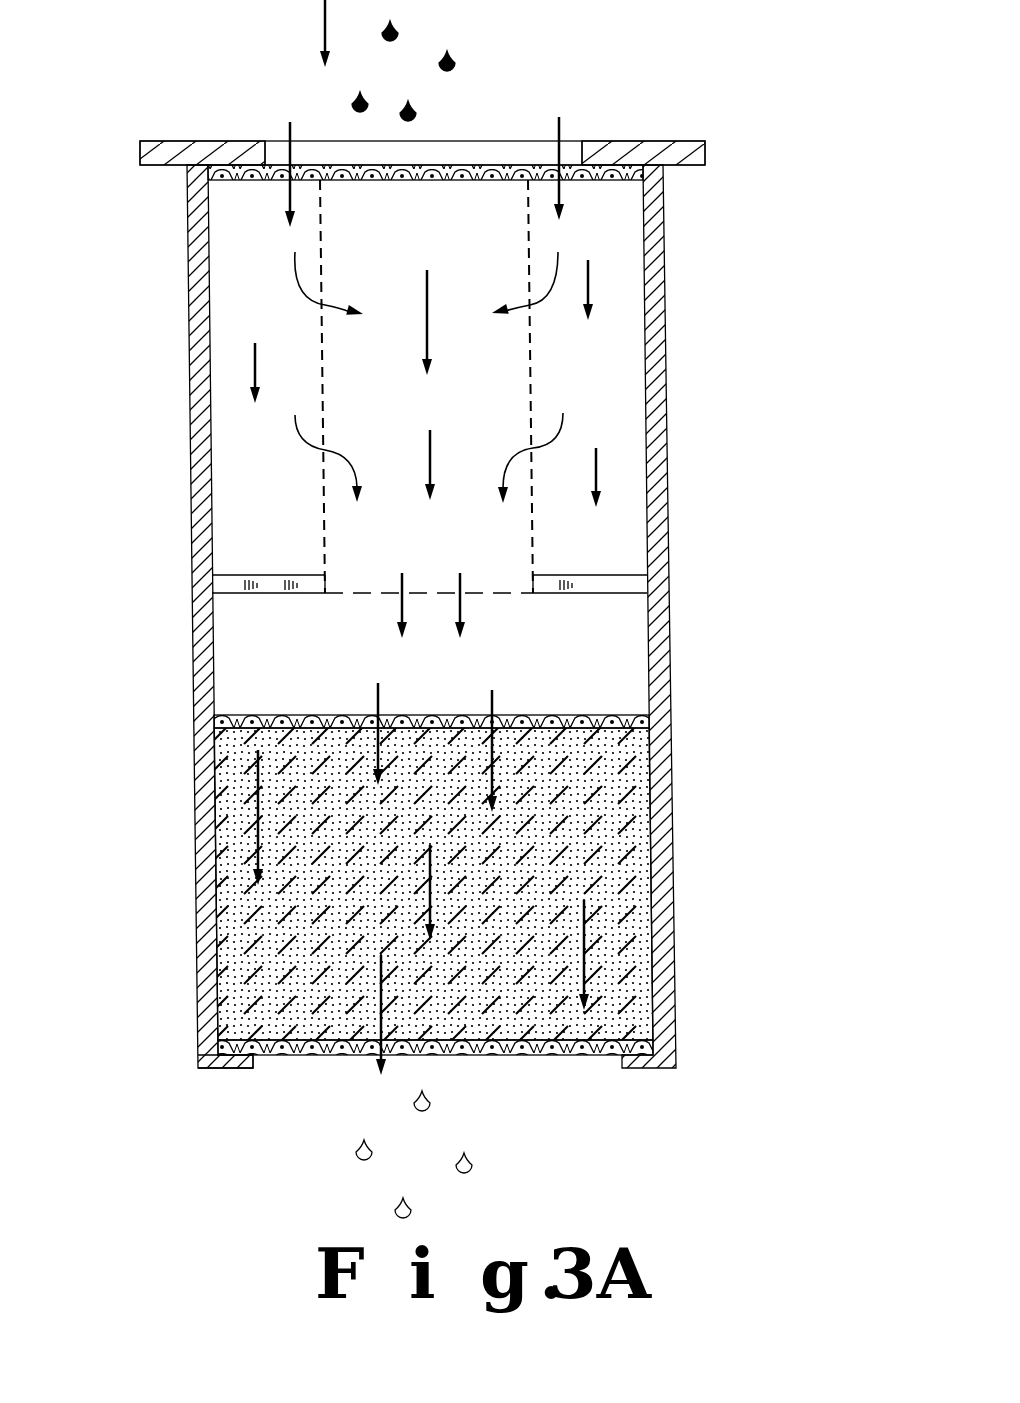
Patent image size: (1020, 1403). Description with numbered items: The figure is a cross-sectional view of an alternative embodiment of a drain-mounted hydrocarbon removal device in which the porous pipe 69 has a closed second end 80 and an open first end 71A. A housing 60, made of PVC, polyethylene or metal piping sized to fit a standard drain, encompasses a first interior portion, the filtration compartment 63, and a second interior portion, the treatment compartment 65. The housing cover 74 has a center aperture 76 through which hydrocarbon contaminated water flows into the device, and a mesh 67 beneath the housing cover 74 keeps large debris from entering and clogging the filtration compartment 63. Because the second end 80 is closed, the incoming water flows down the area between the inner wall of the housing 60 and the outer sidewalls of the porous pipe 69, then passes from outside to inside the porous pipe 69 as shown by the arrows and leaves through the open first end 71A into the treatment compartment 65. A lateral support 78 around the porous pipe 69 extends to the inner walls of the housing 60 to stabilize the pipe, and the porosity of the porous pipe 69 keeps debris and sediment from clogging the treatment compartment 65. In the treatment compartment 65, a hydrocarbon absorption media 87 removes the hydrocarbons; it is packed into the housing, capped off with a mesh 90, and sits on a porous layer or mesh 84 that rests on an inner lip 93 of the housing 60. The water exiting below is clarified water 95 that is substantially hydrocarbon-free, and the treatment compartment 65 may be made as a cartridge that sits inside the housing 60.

The housing 60 is at (187, 375).
The filtration compartment 63 is at (245, 287).
The treatment compartment 65 is at (655, 852).
The mesh 67 is at (420, 160).
The porous pipe 69 is at (530, 340).
The open first end 71A is at (480, 593).
The housing cover 74 is at (625, 142).
The center aperture 76 is at (568, 150).
The lateral support 78 is at (275, 578).
The closed second end 80 is at (345, 165).
The porous layer or mesh 84 is at (655, 1052).
The hydrocarbon absorption media 87 is at (272, 950).
The mesh 90 is at (253, 716).
The inner lip 93 is at (216, 1068).
The clarified water 95 is at (550, 1125).